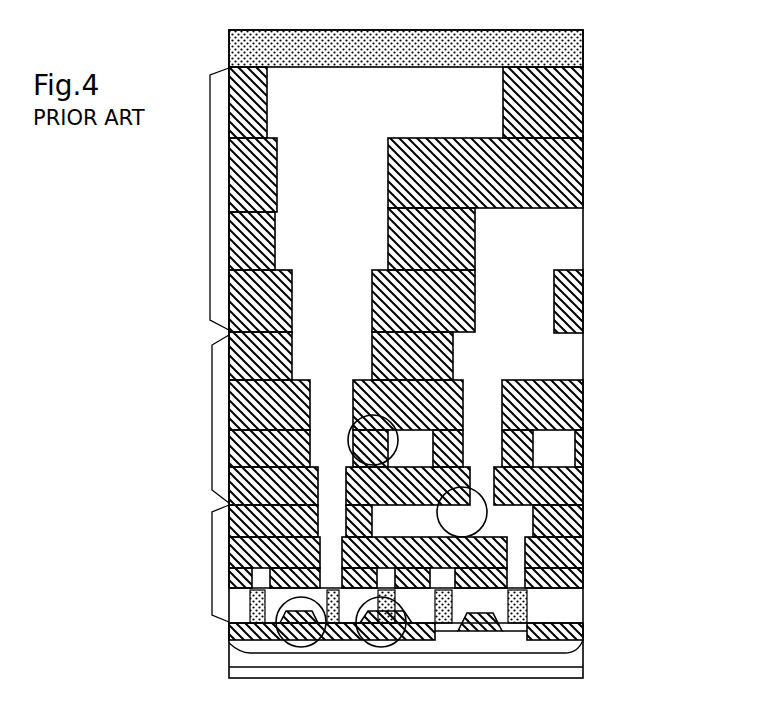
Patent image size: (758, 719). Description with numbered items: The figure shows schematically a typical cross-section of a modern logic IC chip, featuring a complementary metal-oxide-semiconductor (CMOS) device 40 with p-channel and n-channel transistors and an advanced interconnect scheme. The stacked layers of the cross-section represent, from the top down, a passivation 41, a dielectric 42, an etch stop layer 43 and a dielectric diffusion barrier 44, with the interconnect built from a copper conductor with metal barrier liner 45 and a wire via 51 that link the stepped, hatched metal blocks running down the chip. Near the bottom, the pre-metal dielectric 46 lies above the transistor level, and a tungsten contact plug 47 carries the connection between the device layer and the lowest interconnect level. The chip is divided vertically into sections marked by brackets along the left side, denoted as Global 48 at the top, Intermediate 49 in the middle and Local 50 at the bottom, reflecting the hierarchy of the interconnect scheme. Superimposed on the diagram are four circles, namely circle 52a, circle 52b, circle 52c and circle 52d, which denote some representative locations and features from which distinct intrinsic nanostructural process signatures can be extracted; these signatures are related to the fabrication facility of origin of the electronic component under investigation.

The complementary metal-oxide-semiconductor (CMOS) device 40 is at (668, 153).
The passivation 41 is at (553, 51).
The dielectric 42 is at (547, 107).
The etch stop layer 43 is at (572, 152).
The dielectric diffusion barrier 44 is at (572, 208).
The copper conductor with metal barrier liner 45 is at (558, 357).
The pre-metal dielectric 46 is at (577, 598).
The tungsten contact plug 47 is at (578, 631).
The Global section 48 is at (210, 206).
The Intermediate section 49 is at (212, 413).
The Local section 50 is at (212, 547).
The wire via 51 is at (343, 141).
The circle 52a is at (353, 427).
The circle 52b is at (487, 504).
The circle 52c is at (283, 645).
The circle 52d is at (378, 643).